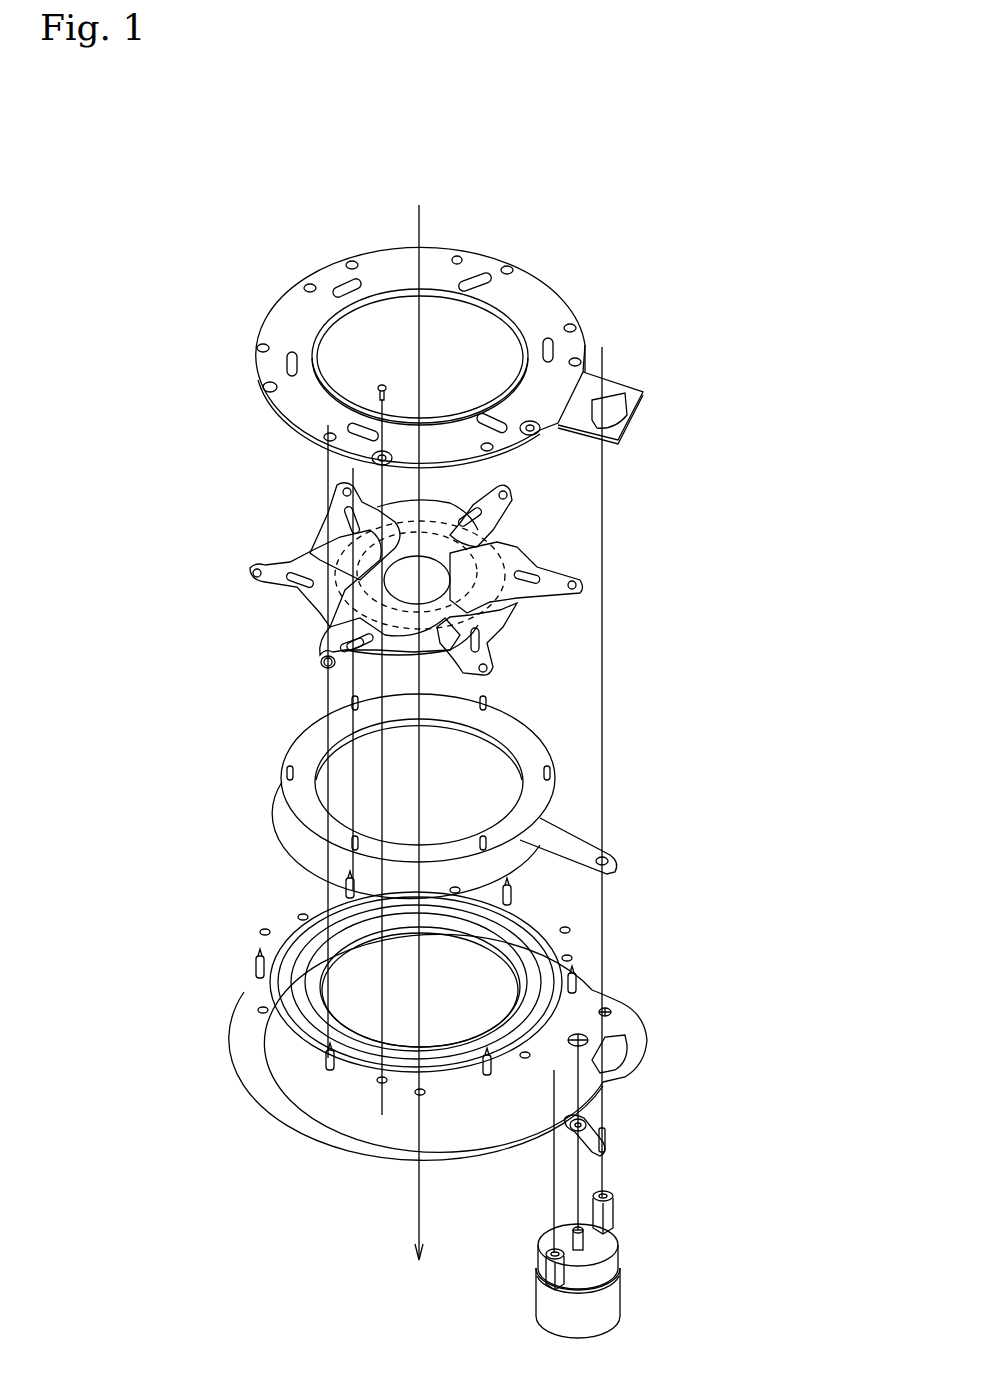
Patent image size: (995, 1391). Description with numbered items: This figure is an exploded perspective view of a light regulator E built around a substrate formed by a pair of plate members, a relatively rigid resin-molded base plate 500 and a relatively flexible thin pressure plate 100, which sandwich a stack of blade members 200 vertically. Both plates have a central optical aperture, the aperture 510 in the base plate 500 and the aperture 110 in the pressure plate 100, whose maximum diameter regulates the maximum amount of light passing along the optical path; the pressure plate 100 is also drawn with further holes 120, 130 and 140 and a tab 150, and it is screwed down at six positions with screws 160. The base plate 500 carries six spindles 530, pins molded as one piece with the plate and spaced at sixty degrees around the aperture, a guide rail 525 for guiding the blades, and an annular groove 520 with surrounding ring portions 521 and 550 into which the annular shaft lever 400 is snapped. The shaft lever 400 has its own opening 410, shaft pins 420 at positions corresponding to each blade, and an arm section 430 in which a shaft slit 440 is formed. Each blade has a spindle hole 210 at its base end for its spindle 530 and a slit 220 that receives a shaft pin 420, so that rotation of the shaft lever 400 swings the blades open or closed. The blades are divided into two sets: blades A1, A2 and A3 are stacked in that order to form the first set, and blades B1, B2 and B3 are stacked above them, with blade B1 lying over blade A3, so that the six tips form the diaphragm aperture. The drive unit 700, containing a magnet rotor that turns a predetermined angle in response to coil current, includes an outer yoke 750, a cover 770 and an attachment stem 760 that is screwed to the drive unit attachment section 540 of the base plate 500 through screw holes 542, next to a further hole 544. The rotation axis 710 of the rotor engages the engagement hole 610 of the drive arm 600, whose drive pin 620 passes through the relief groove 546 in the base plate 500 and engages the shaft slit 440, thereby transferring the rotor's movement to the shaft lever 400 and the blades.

The pressure plate 100 is at (262, 322).
The optical aperture 110 is at (398, 320).
The hole 120 is at (462, 255).
The slot 130 is at (478, 278).
The hole 140 is at (512, 267).
The tab 150 is at (505, 328).
The screw 160 is at (380, 385).
The blade member 200 is at (262, 558).
The spindle hole 210 is at (320, 663).
The slit 220 is at (345, 645).
The blade A1 is at (335, 540).
The blade A2 is at (258, 578).
The blade A3 is at (322, 670).
The blade B1 is at (505, 640).
The blade B2 is at (530, 555).
The blade B3 is at (510, 495).
The shaft lever 400 is at (287, 752).
The opening 410 is at (485, 755).
The shaft pin 420 is at (285, 773).
The arm section 430 is at (575, 845).
The shaft slit 440 is at (608, 858).
The base plate 500 is at (255, 932).
The optical aperture 510 is at (332, 933).
The annular groove 520 is at (282, 990).
The ring portion 521 is at (332, 1033).
The guide rail 525 is at (293, 1002).
The spindle 530 is at (258, 960).
The drive unit attachment section 540 is at (640, 1018).
The screw hole 542 is at (610, 1008).
The hole 544 is at (582, 1030).
The relief groove 546 is at (615, 1048).
The ring portion 550 is at (268, 1035).
The drive arm 600 is at (615, 1135).
The engagement hole 610 is at (568, 1124).
The drive pin 620 is at (607, 1150).
The drive unit 700 is at (632, 1262).
The rotation axis 710 is at (565, 1235).
The outer yoke 750 is at (555, 1310).
The attachment stem 760 is at (540, 1273).
The cover 770 is at (615, 1225).
The light regulator E is at (635, 318).